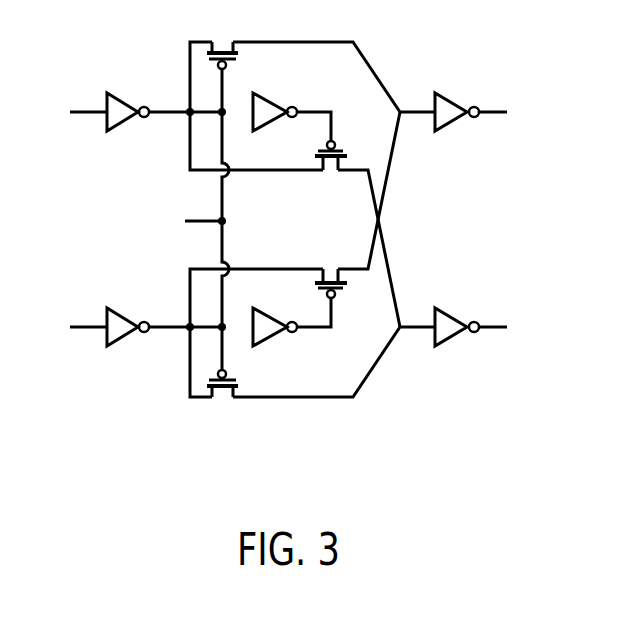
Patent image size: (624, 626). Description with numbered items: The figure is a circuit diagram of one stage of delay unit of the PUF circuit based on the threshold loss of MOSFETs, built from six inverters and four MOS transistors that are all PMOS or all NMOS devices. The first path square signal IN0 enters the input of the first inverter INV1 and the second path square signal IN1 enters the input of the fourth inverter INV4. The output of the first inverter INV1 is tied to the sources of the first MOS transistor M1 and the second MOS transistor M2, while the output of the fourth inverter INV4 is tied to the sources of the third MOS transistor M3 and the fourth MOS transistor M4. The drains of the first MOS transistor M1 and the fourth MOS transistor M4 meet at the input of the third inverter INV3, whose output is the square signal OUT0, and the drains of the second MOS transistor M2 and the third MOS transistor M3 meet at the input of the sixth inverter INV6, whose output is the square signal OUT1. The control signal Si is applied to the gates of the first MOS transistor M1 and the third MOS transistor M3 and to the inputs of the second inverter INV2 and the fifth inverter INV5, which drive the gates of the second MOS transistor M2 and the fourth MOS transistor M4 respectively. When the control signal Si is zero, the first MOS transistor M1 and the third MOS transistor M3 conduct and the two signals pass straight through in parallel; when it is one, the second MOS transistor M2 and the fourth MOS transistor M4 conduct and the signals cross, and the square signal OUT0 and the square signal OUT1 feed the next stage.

The first MOS transistor M1 is at (223, 39).
The second MOS transistor M2 is at (331, 174).
The third MOS transistor M3 is at (225, 401).
The fourth MOS transistor M4 is at (331, 265).
The first inverter INV1 is at (128, 128).
The second inverter INV2 is at (282, 97).
The third inverter INV3 is at (457, 128).
The fourth inverter INV4 is at (131, 312).
The fifth inverter INV5 is at (285, 343).
The sixth inverter INV6 is at (458, 312).
The first path square signal IN0 is at (67, 112).
The second path square signal IN1 is at (67, 328).
The square signal OUT0 is at (532, 112).
The square signal OUT1 is at (531, 330).
The control signal Si is at (192, 226).